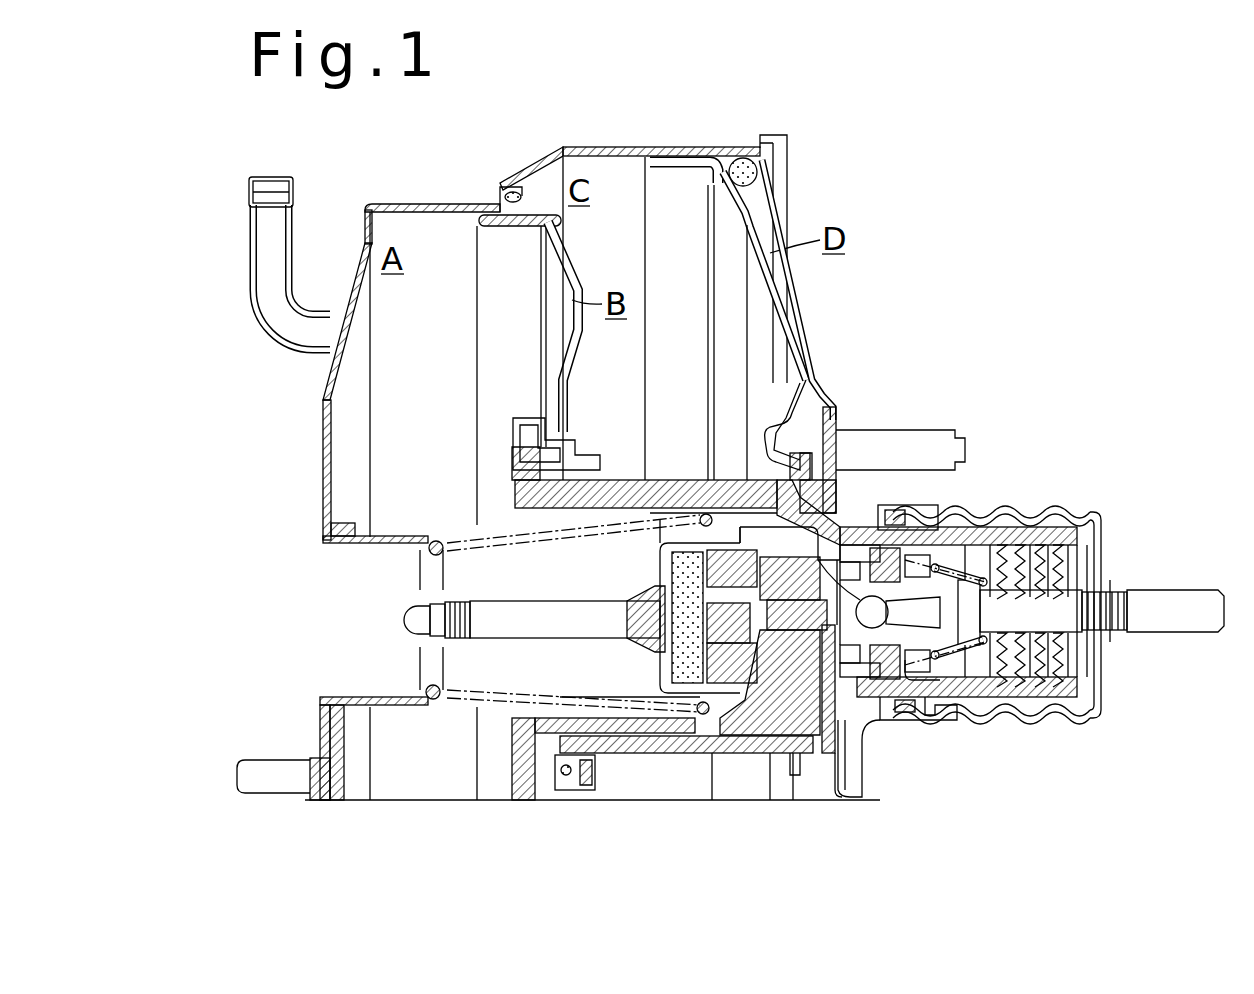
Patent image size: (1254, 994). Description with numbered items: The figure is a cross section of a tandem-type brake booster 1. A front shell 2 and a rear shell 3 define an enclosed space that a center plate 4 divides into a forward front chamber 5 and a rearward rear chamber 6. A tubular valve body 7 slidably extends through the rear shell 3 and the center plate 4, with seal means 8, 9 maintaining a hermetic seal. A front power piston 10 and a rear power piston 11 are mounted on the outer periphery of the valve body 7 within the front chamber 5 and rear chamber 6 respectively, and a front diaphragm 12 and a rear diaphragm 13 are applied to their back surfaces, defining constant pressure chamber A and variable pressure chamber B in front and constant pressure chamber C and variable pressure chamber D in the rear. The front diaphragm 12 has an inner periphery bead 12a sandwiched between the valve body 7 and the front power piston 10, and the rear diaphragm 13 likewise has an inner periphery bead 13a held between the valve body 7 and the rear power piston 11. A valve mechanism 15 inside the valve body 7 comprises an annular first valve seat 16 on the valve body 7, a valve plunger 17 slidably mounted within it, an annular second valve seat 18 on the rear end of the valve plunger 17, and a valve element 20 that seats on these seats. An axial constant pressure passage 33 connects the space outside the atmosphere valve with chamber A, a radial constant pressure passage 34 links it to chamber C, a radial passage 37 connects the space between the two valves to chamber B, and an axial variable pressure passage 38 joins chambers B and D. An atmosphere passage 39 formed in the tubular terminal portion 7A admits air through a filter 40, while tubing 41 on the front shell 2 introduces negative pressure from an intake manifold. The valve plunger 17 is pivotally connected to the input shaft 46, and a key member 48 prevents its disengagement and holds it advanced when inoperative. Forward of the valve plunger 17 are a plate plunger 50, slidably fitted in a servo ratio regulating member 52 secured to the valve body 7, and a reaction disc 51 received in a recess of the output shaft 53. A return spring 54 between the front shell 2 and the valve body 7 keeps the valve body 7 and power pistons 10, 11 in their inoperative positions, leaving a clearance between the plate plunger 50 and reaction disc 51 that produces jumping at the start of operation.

The brake booster 1 is at (822, 168).
The front shell 2 is at (370, 207).
The rear shell 3 is at (800, 320).
The center plate 4 is at (575, 272).
The front chamber 5 is at (425, 215).
The rear chamber 6 is at (620, 175).
The valve body 7 is at (515, 770).
The tubular terminal portion 7A is at (1010, 520).
The seal means 8 is at (572, 785).
The seal means 9 is at (908, 720).
The front power piston 10 is at (530, 313).
The rear power piston 11 is at (733, 277).
The front diaphragm 12 is at (492, 282).
The inner periphery bead 12a is at (560, 447).
The rear diaphragm 13 is at (673, 215).
The inner periphery bead 13a is at (813, 457).
The valve mechanism 15 is at (923, 680).
The first valve seat 16 is at (878, 560).
The valve plunger 17 is at (808, 747).
The second valve seat 18 is at (898, 565).
The valve element 20 is at (915, 572).
The constant pressure passage 33 is at (722, 513).
The radial constant pressure passage 34 is at (800, 563).
The radial passage 37 is at (855, 663).
The variable pressure passage 38 is at (625, 735).
The atmosphere passage 39 is at (1060, 550).
The filter 40 is at (1035, 550).
The tubing 41 is at (250, 265).
The input shaft 46 is at (1180, 598).
The key member 48 is at (827, 747).
The plate plunger 50 is at (700, 590).
The reaction disc 51 is at (683, 563).
The servo ratio regulating member 52 is at (700, 660).
The output shaft 53 is at (515, 610).
The return spring 54 is at (478, 548).